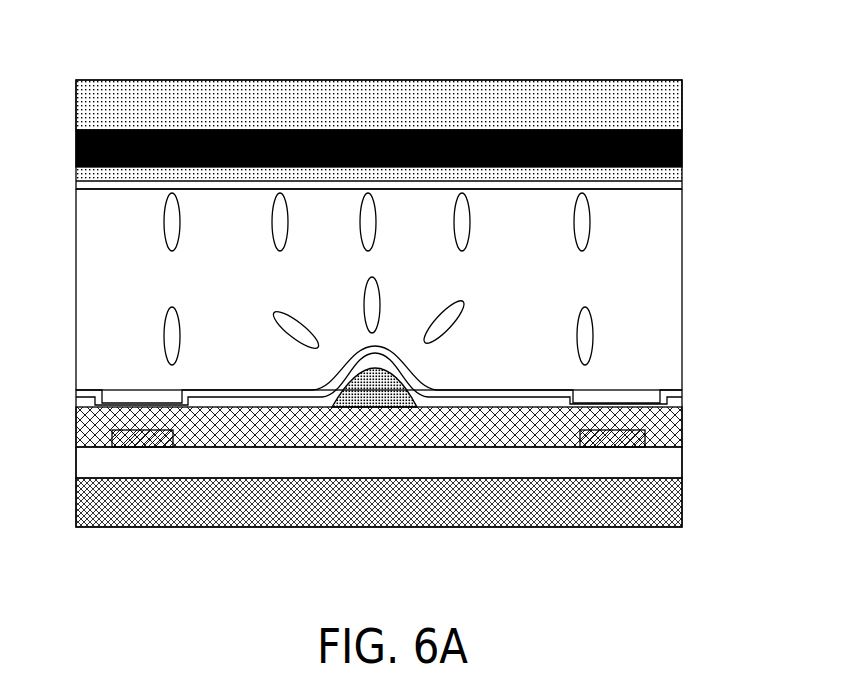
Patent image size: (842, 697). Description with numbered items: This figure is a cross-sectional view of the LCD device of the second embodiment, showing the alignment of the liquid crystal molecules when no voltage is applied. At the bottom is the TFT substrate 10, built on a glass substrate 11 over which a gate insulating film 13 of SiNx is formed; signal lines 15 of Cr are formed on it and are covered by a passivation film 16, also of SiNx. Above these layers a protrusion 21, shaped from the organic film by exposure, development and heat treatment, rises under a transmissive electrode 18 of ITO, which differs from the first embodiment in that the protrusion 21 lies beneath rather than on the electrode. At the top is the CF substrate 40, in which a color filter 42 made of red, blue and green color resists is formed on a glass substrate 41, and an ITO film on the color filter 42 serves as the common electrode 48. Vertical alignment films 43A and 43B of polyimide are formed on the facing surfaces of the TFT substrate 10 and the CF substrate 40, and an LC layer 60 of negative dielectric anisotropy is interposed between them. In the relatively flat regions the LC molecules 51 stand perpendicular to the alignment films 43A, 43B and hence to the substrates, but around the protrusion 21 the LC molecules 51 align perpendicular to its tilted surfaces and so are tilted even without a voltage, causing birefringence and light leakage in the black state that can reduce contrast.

The TFT substrate 10 is at (693, 338).
The glass substrate 11 is at (558, 513).
The gate insulating film 13 is at (502, 457).
The signal lines 15 is at (139, 440).
The passivation film 16 is at (260, 418).
The transmissive electrode 18 is at (438, 403).
The protrusion 21 is at (379, 386).
The CF substrate 40 is at (693, 76).
The glass substrate 41 is at (398, 102).
The CF 42 is at (513, 150).
The alignment film 43A is at (418, 387).
The alignment film 43B is at (532, 190).
The common electrode 48 is at (625, 173).
The LC molecules 51 is at (178, 330).
The LC layer 60 is at (672, 266).